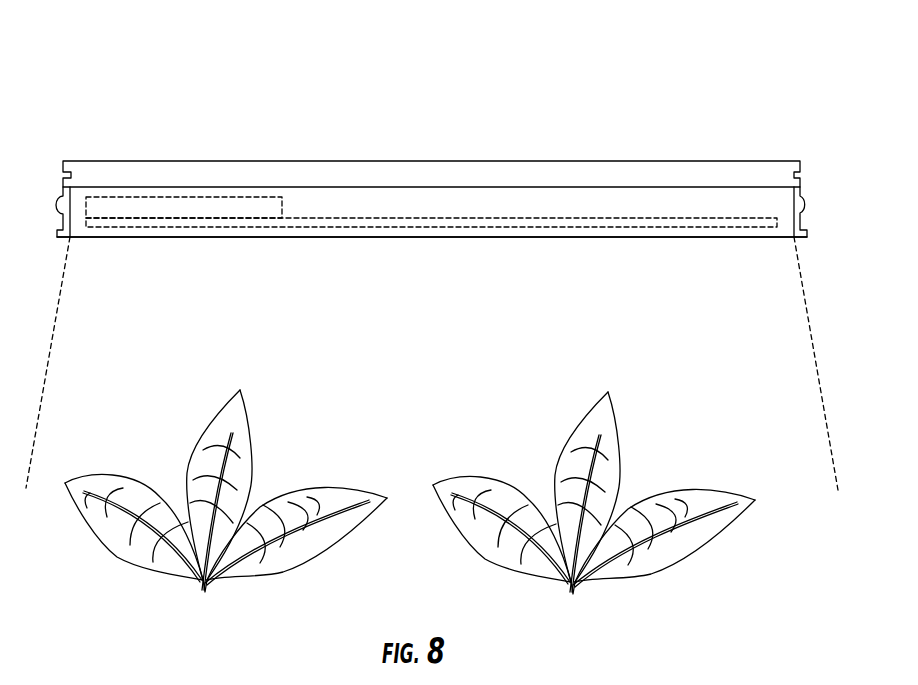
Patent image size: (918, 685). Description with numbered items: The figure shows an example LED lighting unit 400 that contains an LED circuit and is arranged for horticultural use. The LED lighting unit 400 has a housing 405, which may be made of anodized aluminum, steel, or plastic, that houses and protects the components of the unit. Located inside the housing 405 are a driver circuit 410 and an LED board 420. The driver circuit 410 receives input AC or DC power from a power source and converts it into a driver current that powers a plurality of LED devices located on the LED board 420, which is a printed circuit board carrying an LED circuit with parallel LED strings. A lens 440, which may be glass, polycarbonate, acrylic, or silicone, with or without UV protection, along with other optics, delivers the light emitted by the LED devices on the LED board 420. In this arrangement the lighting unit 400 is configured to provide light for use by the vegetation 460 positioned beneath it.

The LED lighting unit 400 is at (572, 100).
The housing 405 is at (450, 160).
The driver circuit 410 is at (192, 197).
The LED board 420 is at (738, 227).
The lens 440 is at (515, 238).
The vegetation 460 is at (688, 408).